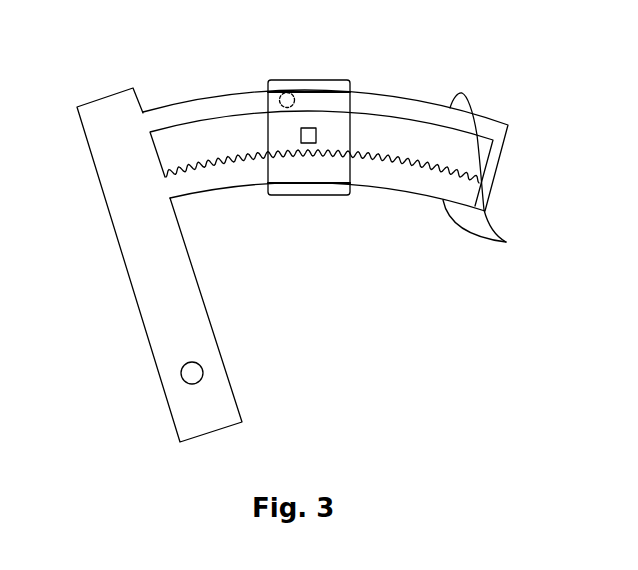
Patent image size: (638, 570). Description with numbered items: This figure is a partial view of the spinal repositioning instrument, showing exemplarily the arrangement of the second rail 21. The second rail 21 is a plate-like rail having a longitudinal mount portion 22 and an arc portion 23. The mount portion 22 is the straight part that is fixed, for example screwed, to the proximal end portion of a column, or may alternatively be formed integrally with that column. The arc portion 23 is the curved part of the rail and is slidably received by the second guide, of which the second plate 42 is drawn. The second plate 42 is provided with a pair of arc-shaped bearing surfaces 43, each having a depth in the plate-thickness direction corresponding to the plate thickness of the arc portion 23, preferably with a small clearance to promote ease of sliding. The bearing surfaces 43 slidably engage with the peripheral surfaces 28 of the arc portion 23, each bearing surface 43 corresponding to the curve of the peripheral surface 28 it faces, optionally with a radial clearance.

The second rail 21 is at (135, 38).
The mount portion 22 is at (103, 122).
The arc portion 23 is at (163, 117).
The peripheral surface 28 is at (352, 172).
The second plate 42 is at (355, 77).
The bearing surfaces 43 is at (285, 177).